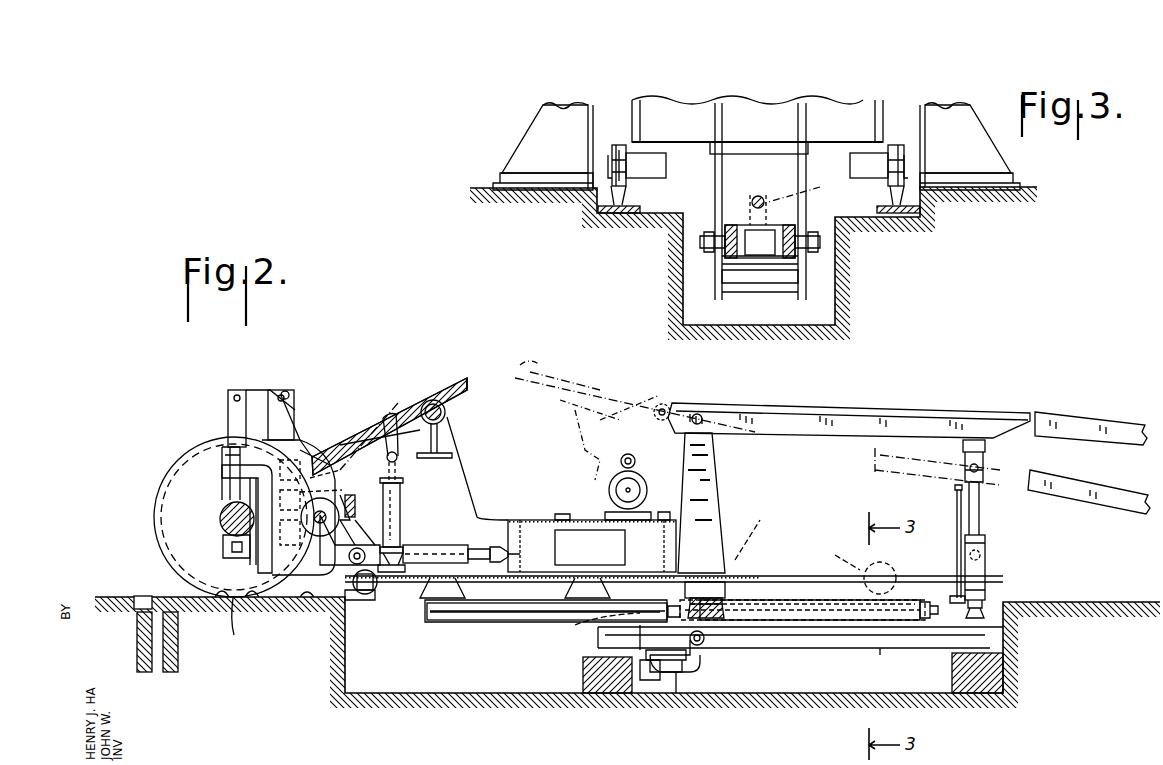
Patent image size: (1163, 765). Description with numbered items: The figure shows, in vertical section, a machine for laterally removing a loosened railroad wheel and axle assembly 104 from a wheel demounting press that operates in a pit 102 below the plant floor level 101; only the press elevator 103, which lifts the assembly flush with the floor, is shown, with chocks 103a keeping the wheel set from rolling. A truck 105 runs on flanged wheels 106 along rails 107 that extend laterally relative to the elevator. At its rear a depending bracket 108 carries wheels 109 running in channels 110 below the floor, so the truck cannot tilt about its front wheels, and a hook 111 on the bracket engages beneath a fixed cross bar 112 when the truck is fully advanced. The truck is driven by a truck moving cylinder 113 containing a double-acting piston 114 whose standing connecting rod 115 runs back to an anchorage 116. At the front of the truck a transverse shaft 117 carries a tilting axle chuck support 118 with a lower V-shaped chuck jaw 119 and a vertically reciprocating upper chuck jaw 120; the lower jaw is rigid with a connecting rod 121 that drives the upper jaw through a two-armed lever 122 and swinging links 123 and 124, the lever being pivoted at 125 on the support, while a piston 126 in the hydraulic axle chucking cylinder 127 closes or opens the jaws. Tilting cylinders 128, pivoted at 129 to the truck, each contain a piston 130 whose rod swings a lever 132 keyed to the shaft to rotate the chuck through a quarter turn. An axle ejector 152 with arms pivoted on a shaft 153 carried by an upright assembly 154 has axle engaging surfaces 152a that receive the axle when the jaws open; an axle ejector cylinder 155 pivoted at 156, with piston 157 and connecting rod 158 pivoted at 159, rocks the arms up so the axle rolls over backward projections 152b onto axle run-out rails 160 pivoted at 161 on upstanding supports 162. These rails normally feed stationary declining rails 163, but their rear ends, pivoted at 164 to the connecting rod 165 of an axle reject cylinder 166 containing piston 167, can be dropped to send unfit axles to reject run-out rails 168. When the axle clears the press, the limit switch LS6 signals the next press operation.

In FIG. 2, the plant floor level 101 is at (105, 597).
In FIG. 3, the pit 102 is at (848, 220).
In FIG. 2, the pit 102 is at (340, 680).
In FIG. 2, the elevator 103 is at (303, 610).
In FIG. 2, the chocks 103a is at (234, 635).
In FIG. 2, the wheel and axle assembly 104 is at (166, 445).
In FIG. 3, the truck 105 is at (835, 108).
In FIG. 2, the truck 105 is at (462, 480).
In FIG. 3, the wheels 106 is at (620, 140).
In FIG. 2, the wheels 106 is at (712, 530).
In FIG. 3, the rails 107 is at (622, 200).
In FIG. 2, the rails 107 is at (745, 600).
In FIG. 2, the depending bracket 108 is at (728, 585).
In FIG. 3, the wheels 109 is at (728, 248).
In FIG. 2, the wheels 109 is at (720, 660).
In FIG. 3, the channels 110 is at (735, 215).
In FIG. 2, the channels 110 is at (800, 640).
In FIG. 3, the hook 111 is at (720, 292).
In FIG. 2, the hook 111 is at (650, 682).
In FIG. 2, the cross bar 112 is at (678, 690).
In FIG. 2, the truck moving cylinder 113 is at (497, 620).
In FIG. 2, the double-acting piston 114 is at (575, 625).
In FIG. 3, the connecting rod 115 is at (763, 197).
In FIG. 2, the connecting rod 115 is at (808, 615).
In FIG. 3, the anchorage 116 is at (807, 191).
In FIG. 2, the anchorage 116 is at (922, 600).
In FIG. 2, the transverse shaft 117 is at (278, 507).
In FIG. 2, the tilting axle chuck support 118 is at (305, 452).
In FIG. 2, the lower V-shaped chuck jaw 119 is at (222, 536).
In FIG. 2, the upper chuck jaw 120 is at (222, 490).
In FIG. 2, the connecting rod 121 is at (298, 440).
In FIG. 2, the two-armed lever 122 is at (250, 392).
In FIG. 2, the swinging link 123 is at (290, 392).
In FIG. 2, the swinging link 124 is at (228, 415).
In FIG. 2, the pivot 125 is at (282, 392).
In FIG. 2, the double-acting piston 126 is at (343, 473).
In FIG. 2, the hydraulic axle chucking cylinder 127 is at (338, 489).
In FIG. 2, the tilting cylinders 128 is at (445, 546).
In FIG. 2, the pivotal connection 129 is at (540, 522).
In FIG. 2, the double-acting piston 130 is at (478, 546).
In FIG. 2, the lever 132 is at (345, 532).
In FIG. 2, the axle ejector 152 is at (366, 445).
In FIG. 2, the axle engaging surface 152a is at (348, 425).
In FIG. 2, the backward projections 152b is at (478, 368).
In FIG. 2, the shaft 153 is at (446, 412).
In FIG. 2, the upright assembly 154 is at (455, 433).
In FIG. 2, the axle ejector cylinder 155 is at (400, 494).
In FIG. 2, the pivot 156 is at (395, 535).
In FIG. 2, the double-acting piston 157 is at (400, 510).
In FIG. 2, the connecting rod 158 is at (398, 480).
In FIG. 2, the pivot 159 is at (388, 420).
In FIG. 2, the axle run-out rails 160 is at (855, 408).
In FIG. 2, the pivot 161 is at (700, 414).
In FIG. 3, the upstanding supports 162 is at (798, 116).
In FIG. 2, the upstanding supports 162 is at (713, 464).
In FIG. 2, the declining rails 163 is at (1107, 418).
In FIG. 2, the pivotal connection 164 is at (980, 468).
In FIG. 2, the connecting rod 165 is at (980, 516).
In FIG. 2, the axle reject cylinder 166 is at (985, 582).
In FIG. 2, the double-acting piston 167 is at (982, 556).
In FIG. 2, the reject run-out rails 168 is at (1100, 498).
In FIG. 2, the limit switch LS6 is at (145, 596).